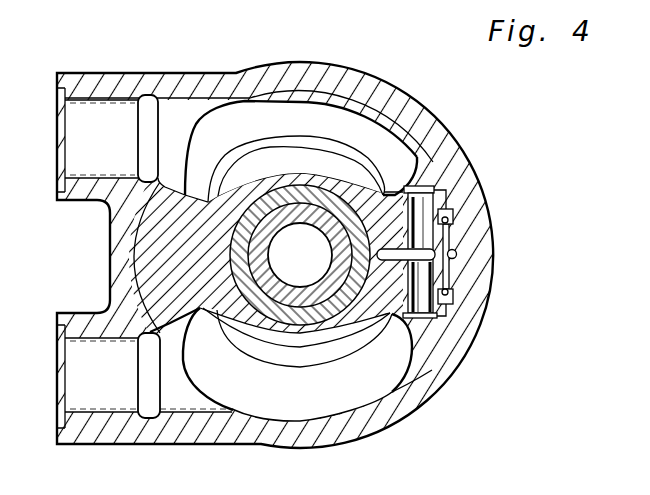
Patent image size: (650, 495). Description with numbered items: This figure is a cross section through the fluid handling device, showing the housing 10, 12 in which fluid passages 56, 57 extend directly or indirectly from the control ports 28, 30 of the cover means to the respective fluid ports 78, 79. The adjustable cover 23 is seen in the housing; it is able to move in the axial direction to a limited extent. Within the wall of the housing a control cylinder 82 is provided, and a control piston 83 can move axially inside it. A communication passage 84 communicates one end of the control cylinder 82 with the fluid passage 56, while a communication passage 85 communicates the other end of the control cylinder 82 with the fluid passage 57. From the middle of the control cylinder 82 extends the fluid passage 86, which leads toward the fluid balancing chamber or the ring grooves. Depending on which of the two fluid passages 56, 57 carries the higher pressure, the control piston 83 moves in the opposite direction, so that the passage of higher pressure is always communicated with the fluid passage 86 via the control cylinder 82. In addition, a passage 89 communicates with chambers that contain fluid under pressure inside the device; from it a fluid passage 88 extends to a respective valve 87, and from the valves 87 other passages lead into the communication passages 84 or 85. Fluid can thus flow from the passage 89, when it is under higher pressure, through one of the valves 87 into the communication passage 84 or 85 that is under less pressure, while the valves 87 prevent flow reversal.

The housing 10 is at (318, 73).
The housing liner 12 is at (354, 432).
The adjustable cover 23 is at (147, 270).
The control port 28 is at (388, 180).
The control port 30 is at (360, 330).
The fluid passage 56 is at (188, 113).
The fluid passage 57 is at (182, 398).
The fluid port 78 is at (88, 165).
The fluid port 79 is at (72, 400).
The control cylinder 82 is at (434, 193).
The control piston 83 is at (458, 301).
The communication passage 84 is at (409, 192).
The communication passage 85 is at (390, 318).
The fluid passage 86 is at (394, 261).
The valve 87 is at (455, 213).
The fluid passage 88 is at (452, 262).
The passage 89 is at (458, 254).